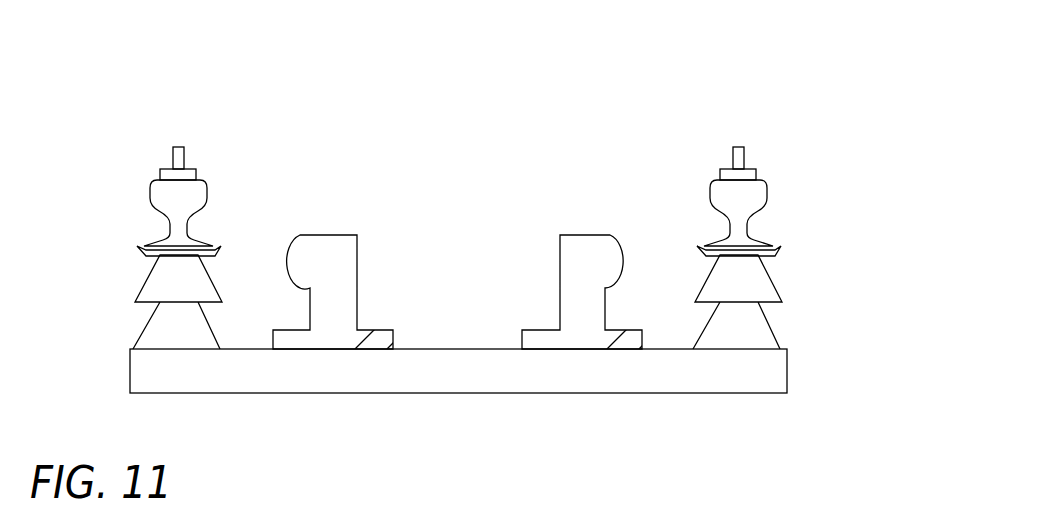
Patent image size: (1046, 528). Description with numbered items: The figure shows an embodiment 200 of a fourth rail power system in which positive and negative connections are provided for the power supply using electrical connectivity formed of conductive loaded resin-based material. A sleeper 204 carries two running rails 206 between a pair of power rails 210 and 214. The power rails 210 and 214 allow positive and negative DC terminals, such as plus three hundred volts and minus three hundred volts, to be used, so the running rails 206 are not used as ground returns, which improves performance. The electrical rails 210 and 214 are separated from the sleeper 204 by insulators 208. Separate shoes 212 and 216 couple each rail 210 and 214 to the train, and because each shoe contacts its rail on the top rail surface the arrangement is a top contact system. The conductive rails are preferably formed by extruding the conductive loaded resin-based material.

The fourth rail power system embodiment 200 is at (782, 65).
The sleeper 204 is at (565, 375).
The running rails 206 is at (553, 257).
The insulators 208 is at (158, 330).
The power rail 210 is at (165, 197).
The shoe 212 is at (180, 153).
The power rail 214 is at (725, 193).
The shoe 216 is at (743, 153).